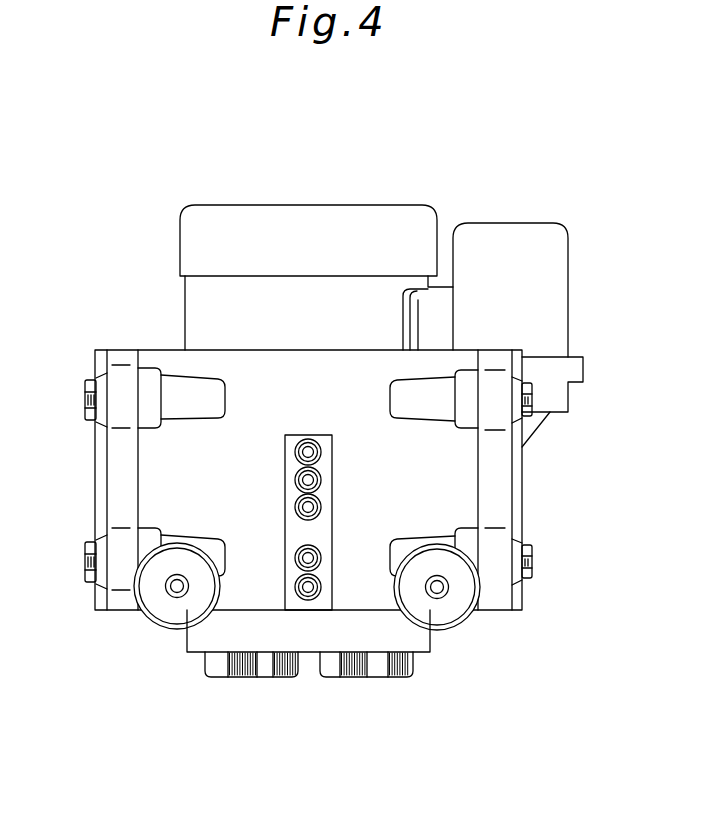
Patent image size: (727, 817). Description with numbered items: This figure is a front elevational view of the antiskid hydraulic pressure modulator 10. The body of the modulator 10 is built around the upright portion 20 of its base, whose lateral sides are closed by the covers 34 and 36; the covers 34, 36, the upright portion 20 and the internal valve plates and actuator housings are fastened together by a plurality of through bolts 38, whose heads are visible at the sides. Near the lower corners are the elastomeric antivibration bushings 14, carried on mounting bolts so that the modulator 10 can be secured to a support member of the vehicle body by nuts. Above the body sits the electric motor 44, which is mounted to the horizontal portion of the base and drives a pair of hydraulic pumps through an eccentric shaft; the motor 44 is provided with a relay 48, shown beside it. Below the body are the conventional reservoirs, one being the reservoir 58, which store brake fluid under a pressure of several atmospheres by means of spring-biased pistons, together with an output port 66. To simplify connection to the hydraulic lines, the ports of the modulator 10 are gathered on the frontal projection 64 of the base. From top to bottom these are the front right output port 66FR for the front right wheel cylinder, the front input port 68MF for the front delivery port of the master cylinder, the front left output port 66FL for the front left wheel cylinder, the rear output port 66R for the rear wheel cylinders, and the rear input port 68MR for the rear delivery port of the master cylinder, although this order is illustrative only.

The antiskid hydraulic pressure modulator 10 is at (549, 168).
The elastomeric antivibration bushing 14 is at (154, 602).
The upright portion 20 is at (173, 362).
The cover 34 is at (500, 490).
The cover 36 is at (118, 488).
The through bolt 38 is at (531, 558).
The electric motor 44 is at (220, 293).
The relay 48 is at (544, 281).
The reservoir 58 is at (399, 676).
The frontal projection 64 is at (291, 508).
The output port 66 is at (218, 669).
The front right output port 66FR is at (321, 452).
The front input port 68MF is at (321, 478).
The front left output port 66FL is at (321, 505).
The rear output port 66R is at (320, 552).
The rear input port 68MR is at (311, 593).